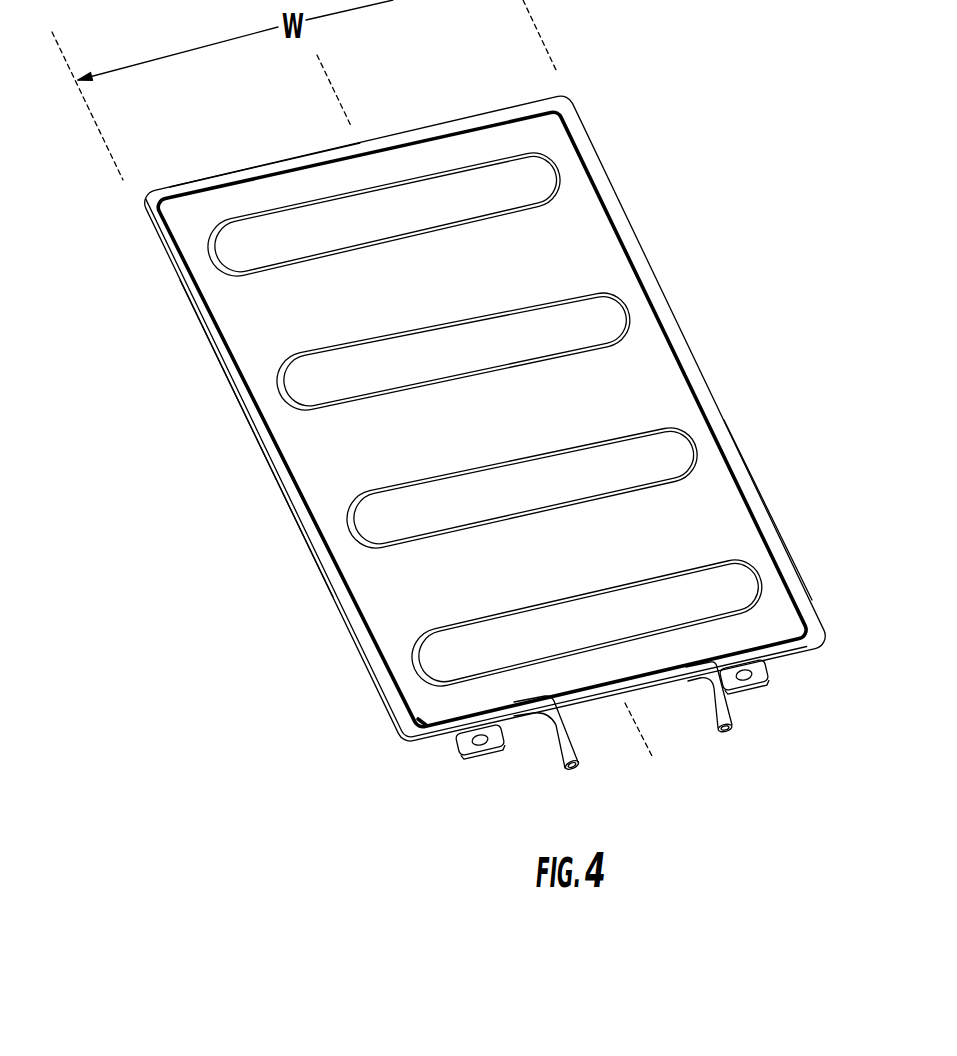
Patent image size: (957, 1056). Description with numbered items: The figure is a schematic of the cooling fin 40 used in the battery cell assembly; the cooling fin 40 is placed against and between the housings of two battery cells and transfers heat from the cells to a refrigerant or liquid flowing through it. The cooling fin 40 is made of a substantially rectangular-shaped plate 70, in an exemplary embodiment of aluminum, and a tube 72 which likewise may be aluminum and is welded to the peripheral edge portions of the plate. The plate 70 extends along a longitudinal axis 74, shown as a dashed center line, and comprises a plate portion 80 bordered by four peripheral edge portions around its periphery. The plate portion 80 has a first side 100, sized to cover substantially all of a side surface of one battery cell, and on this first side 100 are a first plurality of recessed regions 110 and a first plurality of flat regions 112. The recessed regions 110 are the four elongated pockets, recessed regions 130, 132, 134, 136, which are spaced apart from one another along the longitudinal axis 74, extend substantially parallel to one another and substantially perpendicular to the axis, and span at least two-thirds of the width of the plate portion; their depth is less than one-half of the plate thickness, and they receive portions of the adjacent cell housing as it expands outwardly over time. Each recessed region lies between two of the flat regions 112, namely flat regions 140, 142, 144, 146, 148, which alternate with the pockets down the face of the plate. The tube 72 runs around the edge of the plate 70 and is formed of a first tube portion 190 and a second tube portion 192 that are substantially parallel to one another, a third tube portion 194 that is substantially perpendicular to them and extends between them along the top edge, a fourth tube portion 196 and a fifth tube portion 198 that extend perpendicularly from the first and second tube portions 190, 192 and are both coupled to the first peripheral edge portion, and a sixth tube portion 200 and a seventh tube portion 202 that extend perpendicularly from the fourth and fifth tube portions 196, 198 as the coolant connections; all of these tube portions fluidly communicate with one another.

The cooling fin 40 is at (497, 408).
The substantially rectangular-shaped plate 70 is at (548, 125).
The tube 72 is at (818, 606).
The longitudinal axis 74 is at (325, 72).
The plate portion 80 is at (760, 538).
The first side 100 is at (404, 679).
The first plurality of recessed regions 110 is at (430, 648).
The first plurality of flat regions 112 is at (685, 643).
The recessed region 130 is at (419, 230).
The recessed region 132 is at (476, 370).
The recessed region 134 is at (537, 508).
The recessed region 136 is at (594, 645).
The flat region 140 is at (411, 185).
The flat region 142 is at (444, 297).
The flat region 144 is at (497, 435).
The flat region 146 is at (559, 575).
The flat region 148 is at (607, 690).
The first tube portion 190 is at (359, 642).
The second tube portion 192 is at (790, 556).
The third tube portion 194 is at (203, 180).
The fourth tube portion 196 is at (443, 730).
The fifth tube portion 198 is at (789, 650).
The sixth tube portion 200 is at (562, 757).
The seventh tube portion 202 is at (707, 722).